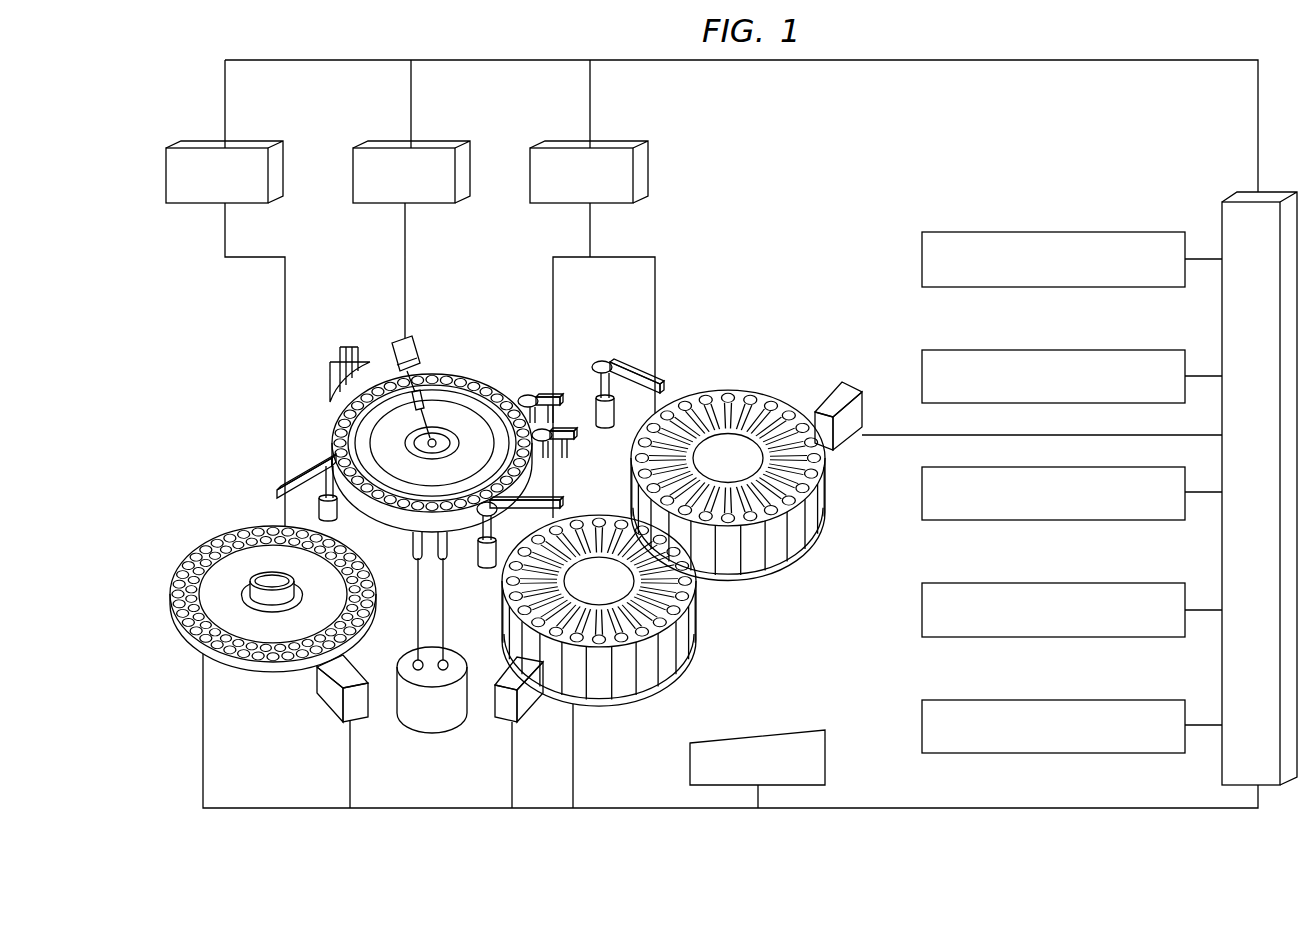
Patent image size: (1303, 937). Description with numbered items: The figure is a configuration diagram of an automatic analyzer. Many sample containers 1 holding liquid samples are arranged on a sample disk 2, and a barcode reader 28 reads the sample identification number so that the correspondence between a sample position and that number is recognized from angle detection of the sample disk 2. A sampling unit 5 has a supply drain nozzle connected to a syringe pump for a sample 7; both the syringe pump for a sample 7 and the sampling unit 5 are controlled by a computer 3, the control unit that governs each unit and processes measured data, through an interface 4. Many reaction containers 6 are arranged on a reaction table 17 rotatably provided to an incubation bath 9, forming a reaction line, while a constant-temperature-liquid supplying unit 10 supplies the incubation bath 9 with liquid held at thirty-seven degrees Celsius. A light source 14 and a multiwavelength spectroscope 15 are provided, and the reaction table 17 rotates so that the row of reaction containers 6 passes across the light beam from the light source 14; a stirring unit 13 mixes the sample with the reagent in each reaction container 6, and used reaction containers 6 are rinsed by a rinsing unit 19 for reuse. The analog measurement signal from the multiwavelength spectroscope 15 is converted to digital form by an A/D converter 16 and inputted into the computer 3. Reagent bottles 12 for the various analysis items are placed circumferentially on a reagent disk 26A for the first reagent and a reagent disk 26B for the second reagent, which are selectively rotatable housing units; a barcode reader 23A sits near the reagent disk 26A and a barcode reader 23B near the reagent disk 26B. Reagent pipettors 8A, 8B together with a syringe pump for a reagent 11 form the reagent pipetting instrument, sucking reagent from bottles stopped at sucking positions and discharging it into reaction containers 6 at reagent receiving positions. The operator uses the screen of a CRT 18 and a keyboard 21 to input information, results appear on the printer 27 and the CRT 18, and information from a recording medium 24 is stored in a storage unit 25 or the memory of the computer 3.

The sample container 1 is at (237, 527).
The sample disk 2 is at (240, 673).
The computer 3 is at (921, 492).
The interface 4 is at (1221, 206).
The sampling unit 5 is at (316, 460).
The reaction container 6 is at (476, 385).
The syringe pump for a sample 7 is at (258, 147).
The reagent pipettor 8A is at (477, 556).
The reagent pipettor 8B is at (604, 362).
The incubation bath 9 is at (402, 523).
The constant-temperature-liquid supplying unit 10 is at (436, 708).
The syringe pump for a reagent 11 is at (620, 147).
The reagent bottle 12 is at (743, 401).
The stirring unit 13 is at (529, 397).
The light source 14 is at (433, 436).
The multiwavelength spectroscope 15 is at (398, 344).
The A/D converter 16 is at (444, 147).
The reaction table 17 is at (494, 400).
The CRT 18 is at (921, 257).
The rinsing unit 19 is at (332, 346).
The keyboard 21 is at (921, 361).
The barcode reader 23A is at (541, 696).
The barcode reader 23B is at (815, 410).
The recording medium 24 is at (921, 608).
The storage unit 25 is at (921, 725).
The reagent disk 26A is at (626, 681).
The reagent disk 26B is at (687, 393).
The printer 27 is at (758, 738).
The barcode reader 28 is at (327, 694).